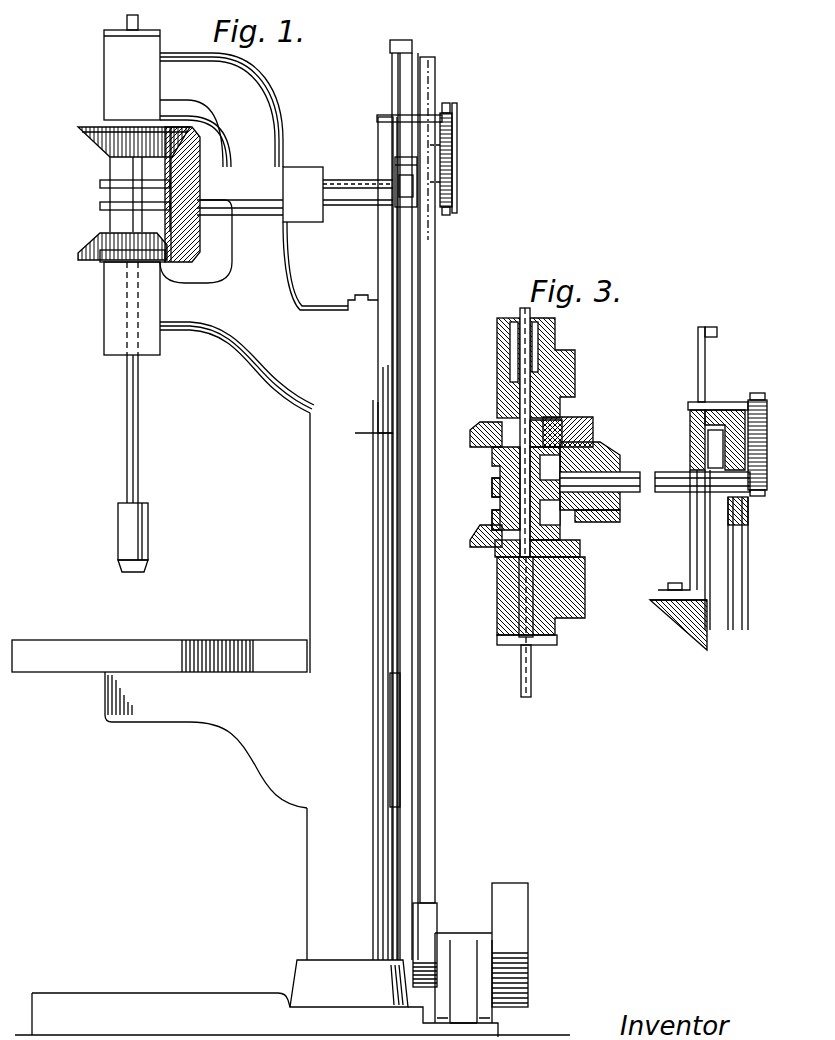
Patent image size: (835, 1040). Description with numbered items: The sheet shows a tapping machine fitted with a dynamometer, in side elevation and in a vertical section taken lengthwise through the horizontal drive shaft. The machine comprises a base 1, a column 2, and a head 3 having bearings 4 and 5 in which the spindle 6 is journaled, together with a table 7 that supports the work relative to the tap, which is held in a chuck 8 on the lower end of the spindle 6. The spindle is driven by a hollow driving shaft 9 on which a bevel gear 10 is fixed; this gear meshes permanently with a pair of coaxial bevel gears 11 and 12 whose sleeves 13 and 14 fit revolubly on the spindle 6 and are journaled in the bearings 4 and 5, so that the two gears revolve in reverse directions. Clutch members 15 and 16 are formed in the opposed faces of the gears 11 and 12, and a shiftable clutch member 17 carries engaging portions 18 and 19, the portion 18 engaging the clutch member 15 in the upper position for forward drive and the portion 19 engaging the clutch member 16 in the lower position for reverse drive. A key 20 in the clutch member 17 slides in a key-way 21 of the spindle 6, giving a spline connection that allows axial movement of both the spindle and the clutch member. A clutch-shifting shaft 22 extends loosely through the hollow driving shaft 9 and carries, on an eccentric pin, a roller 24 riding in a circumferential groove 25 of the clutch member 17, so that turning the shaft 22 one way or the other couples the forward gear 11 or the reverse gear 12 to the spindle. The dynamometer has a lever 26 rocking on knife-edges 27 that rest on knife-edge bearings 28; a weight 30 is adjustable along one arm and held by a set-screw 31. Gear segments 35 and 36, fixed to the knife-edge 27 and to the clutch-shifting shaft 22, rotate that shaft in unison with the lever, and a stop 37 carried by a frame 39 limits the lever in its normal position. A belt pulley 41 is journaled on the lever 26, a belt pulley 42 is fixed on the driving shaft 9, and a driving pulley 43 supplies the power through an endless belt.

In FIG. 1, the base 1 is at (180, 1000).
In FIG. 1, the column 2 is at (310, 520).
In FIG. 1, the head 3 is at (273, 118).
In FIG. 1, the bearing 4 is at (104, 86).
In FIG. 3, the bearing 4 is at (497, 340).
In FIG. 1, the bearing 5 is at (109, 308).
In FIG. 3, the bearing 5 is at (497, 596).
In FIG. 1, the spindle 6 is at (127, 382).
In FIG. 3, the spindle 6 is at (520, 393).
In FIG. 1, the table 7 is at (180, 646).
In FIG. 1, the chuck 8 is at (125, 515).
In FIG. 1, the driving shaft 9 is at (340, 190).
In FIG. 3, the driving shaft 9 is at (660, 472).
In FIG. 1, the bevel gear 10 is at (197, 147).
In FIG. 3, the bevel gear 10 is at (678, 560).
In FIG. 1, the bevel gear 11 is at (92, 138).
In FIG. 3, the bevel gear 11 is at (485, 430).
In FIG. 1, the bevel gear 12 is at (88, 243).
In FIG. 3, the bevel gear 12 is at (490, 536).
In FIG. 3, the sleeve 13 is at (512, 368).
In FIG. 3, the sleeve 14 is at (519, 562).
In FIG. 3, the clutch member 15 is at (565, 420).
In FIG. 1, the clutch member 16 is at (173, 258).
In FIG. 3, the clutch member 16 is at (580, 548).
In FIG. 3, the shiftable clutch member 17 is at (508, 462).
In FIG. 3, the engaging portion 18 is at (555, 425).
In FIG. 1, the engaging portion 19 is at (125, 245).
In FIG. 3, the engaging portion 19 is at (505, 541).
In FIG. 3, the key 20 is at (508, 505).
In FIG. 3, the key-way 21 is at (508, 482).
In FIG. 3, the clutch-shifting shaft 22 is at (592, 470).
In FIG. 3, the roller 24 is at (600, 518).
In FIG. 1, the circumferential groove 25 is at (100, 203).
In FIG. 1, the lever 26 is at (407, 82).
In FIG. 3, the lever 26 is at (722, 404).
In FIG. 1, the knife-edge 27 is at (418, 118).
In FIG. 3, the knife-edge 27 is at (696, 404).
In FIG. 3, the knife-edge bearing 28 is at (692, 416).
In FIG. 1, the weight 30 is at (395, 168).
In FIG. 1, the set-screw 31 is at (393, 183).
In FIG. 1, the gear segment 35 is at (457, 144).
In FIG. 3, the gear segment 35 is at (762, 398).
In FIG. 1, the gear segment 36 is at (457, 176).
In FIG. 3, the gear segment 36 is at (757, 484).
In FIG. 1, the stop 37 is at (400, 44).
In FIG. 3, the stop 37 is at (712, 333).
In FIG. 1, the frame 39 is at (378, 242).
In FIG. 3, the frame 39 is at (705, 512).
In FIG. 1, the belt pulley 41 is at (433, 62).
In FIG. 1, the belt pulley 42 is at (425, 220).
In FIG. 3, the belt pulley 42 is at (748, 510).
In FIG. 1, the driving pulley 43 is at (437, 918).